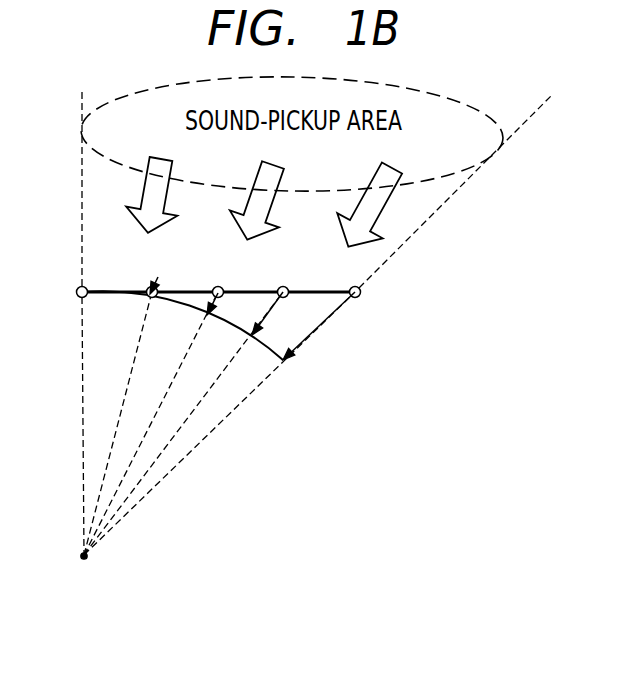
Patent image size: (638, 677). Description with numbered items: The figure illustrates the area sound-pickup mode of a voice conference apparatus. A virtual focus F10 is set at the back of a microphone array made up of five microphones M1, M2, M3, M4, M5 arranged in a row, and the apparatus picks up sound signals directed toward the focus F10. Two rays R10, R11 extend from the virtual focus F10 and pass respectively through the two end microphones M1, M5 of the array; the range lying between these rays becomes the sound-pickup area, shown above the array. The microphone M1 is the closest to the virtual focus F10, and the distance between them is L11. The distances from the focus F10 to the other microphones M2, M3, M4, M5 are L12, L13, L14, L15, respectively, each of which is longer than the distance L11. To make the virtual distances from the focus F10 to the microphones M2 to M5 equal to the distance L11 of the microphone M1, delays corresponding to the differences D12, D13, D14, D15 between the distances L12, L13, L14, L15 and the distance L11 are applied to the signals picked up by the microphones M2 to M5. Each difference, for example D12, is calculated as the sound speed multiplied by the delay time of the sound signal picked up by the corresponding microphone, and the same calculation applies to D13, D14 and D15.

The microphone M1 is at (68, 279).
The microphone M2 is at (137, 279).
The microphone M3 is at (203, 279).
The microphone M4 is at (269, 278).
The microphone M5 is at (342, 278).
The difference D12 is at (132, 302).
The difference D13 is at (233, 309).
The difference D14 is at (282, 313).
The difference D15 is at (320, 326).
The distance L11 is at (64, 426).
The distance L12 is at (119, 419).
The distance L13 is at (151, 423).
The distance L14 is at (183, 423).
The distance L15 is at (219, 423).
The ray R10 is at (62, 189).
The ray R11 is at (456, 191).
The virtual focus F10 is at (76, 573).